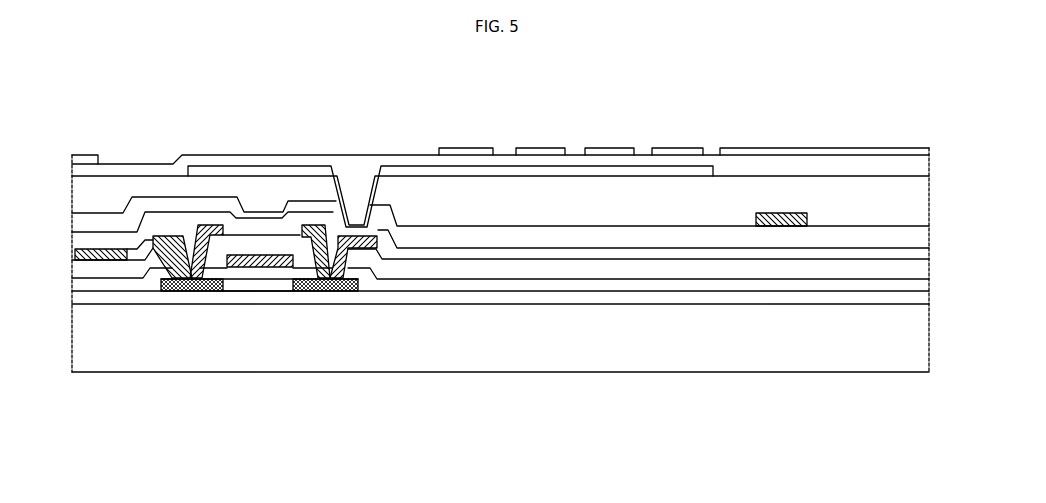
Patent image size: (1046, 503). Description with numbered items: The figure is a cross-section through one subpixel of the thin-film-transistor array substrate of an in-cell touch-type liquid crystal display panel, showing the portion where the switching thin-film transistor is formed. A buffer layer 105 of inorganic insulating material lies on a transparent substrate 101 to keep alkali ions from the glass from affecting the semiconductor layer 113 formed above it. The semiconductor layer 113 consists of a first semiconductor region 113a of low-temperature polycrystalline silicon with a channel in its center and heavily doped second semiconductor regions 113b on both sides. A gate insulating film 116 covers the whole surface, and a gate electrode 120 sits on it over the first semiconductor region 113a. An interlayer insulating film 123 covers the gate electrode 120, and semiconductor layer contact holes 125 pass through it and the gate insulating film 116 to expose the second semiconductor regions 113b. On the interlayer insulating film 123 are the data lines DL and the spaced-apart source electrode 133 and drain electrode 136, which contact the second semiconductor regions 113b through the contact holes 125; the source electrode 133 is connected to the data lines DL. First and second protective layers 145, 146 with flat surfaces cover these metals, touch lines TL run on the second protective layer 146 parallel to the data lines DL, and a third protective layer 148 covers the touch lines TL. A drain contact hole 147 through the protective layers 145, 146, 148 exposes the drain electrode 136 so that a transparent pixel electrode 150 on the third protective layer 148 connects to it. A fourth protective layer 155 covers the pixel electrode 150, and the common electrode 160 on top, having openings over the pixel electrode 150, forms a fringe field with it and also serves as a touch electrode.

The transparent substrate 101 is at (878, 355).
The buffer layer 105 is at (542, 295).
The semiconductor layer 113 is at (259, 341).
The first semiconductor region 113a is at (270, 292).
The second semiconductor region 113b is at (208, 292).
The gate insulating film 116 is at (592, 286).
The gate electrode 120 is at (237, 266).
The interlayer insulating film 123 is at (650, 271).
The semiconductor layer contact hole 125 is at (188, 252).
The source electrode 133 is at (175, 233).
The drain electrode 136 is at (308, 225).
The first protective layer 145 is at (490, 254).
The second protective layer 146 is at (708, 236).
The drain contact hole 147 is at (356, 213).
The third protective layer 148 is at (443, 207).
The pixel electrode 150 is at (458, 173).
The fourth protective layer 155 is at (758, 167).
The common electrode 160 is at (82, 155).
The data line DL is at (93, 263).
The touch line TL is at (780, 228).